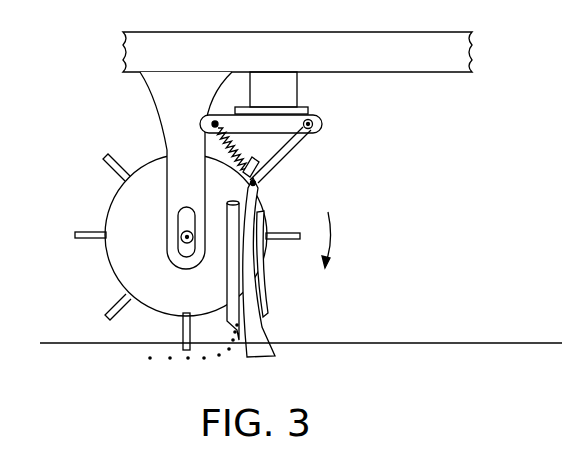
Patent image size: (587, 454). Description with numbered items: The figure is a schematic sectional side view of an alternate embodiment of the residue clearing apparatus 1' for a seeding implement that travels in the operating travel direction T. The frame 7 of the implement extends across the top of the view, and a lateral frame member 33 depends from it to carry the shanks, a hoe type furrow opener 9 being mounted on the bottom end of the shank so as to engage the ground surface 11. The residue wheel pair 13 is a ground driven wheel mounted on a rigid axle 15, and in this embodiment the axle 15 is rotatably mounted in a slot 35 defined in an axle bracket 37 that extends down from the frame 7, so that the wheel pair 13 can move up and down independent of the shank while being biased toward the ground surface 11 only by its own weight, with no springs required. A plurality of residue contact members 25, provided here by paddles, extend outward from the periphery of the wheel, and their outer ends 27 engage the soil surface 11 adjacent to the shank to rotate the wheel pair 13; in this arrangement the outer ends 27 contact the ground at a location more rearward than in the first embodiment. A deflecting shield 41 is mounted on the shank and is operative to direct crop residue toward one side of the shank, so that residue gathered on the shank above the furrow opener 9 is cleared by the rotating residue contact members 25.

The frame 7 is at (422, 73).
The operating travel direction T is at (485, 53).
The lateral frame member 33 is at (297, 92).
The residue wheel pair 13 is at (128, 185).
The axle 15 is at (185, 207).
The slot 35 is at (182, 260).
The axle bracket 37 is at (167, 211).
The deflecting shield 41 is at (262, 256).
The furrow opener 9 is at (262, 360).
The residue contact members 25 is at (282, 232).
The outer ends 27 is at (301, 233).
The residue clearing apparatus 1' is at (427, 233).
The ground surface 11 is at (430, 343).